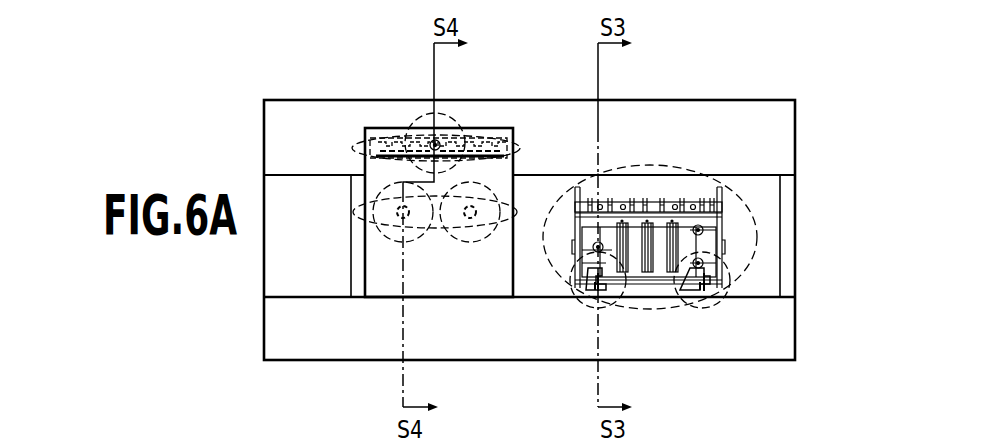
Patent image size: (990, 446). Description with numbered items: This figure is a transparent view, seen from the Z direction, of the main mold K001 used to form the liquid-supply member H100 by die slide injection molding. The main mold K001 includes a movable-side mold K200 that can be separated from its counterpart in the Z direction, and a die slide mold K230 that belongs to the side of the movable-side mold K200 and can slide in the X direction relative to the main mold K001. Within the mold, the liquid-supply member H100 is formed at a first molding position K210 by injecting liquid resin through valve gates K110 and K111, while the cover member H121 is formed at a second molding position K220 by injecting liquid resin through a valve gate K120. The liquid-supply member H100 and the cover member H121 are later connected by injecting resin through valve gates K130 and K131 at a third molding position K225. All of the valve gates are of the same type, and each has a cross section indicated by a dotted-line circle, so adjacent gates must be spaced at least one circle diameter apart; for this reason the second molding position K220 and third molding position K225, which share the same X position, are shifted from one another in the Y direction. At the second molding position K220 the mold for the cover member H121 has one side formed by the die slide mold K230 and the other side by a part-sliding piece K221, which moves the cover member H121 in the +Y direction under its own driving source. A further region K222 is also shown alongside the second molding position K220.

The main mold K001 is at (881, 113).
The movable-side mold K200 is at (767, 112).
The first molding position K210 is at (760, 260).
The die slide mold K230 is at (770, 206).
The second molding position K220 is at (356, 148).
The part-sliding piece K221 is at (398, 143).
The lower holding portion K222 is at (390, 283).
The third molding position K225 is at (356, 212).
The cover member H121 is at (400, 140).
The valve gate K120 is at (453, 120).
The valve gate K131 is at (408, 250).
The valve gate K130 is at (477, 250).
The liquid-supply member H100 is at (660, 217).
The valve gate K111 is at (610, 313).
The valve gate K110 is at (720, 313).